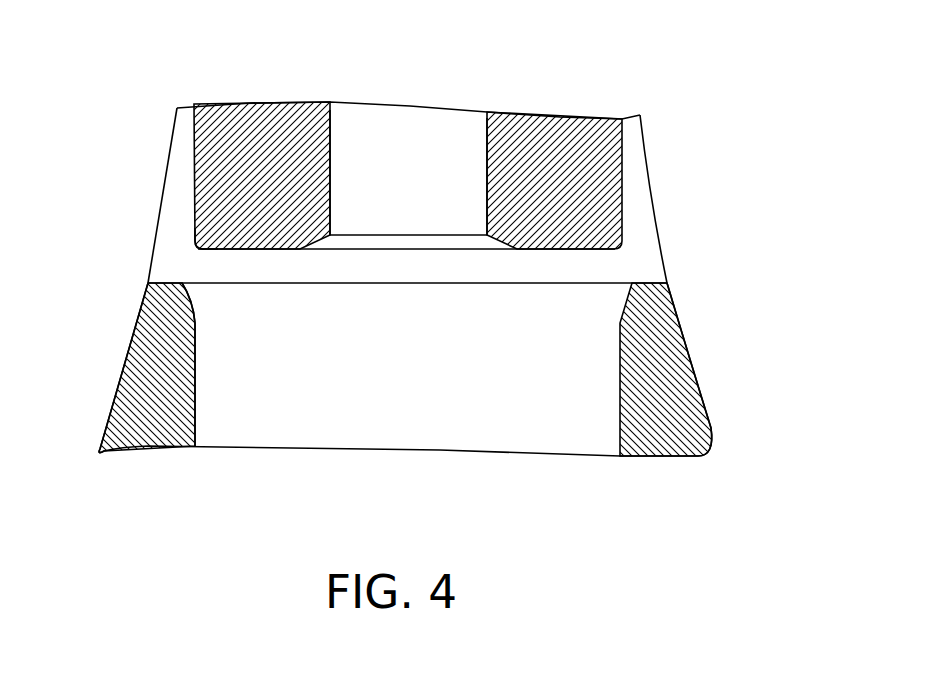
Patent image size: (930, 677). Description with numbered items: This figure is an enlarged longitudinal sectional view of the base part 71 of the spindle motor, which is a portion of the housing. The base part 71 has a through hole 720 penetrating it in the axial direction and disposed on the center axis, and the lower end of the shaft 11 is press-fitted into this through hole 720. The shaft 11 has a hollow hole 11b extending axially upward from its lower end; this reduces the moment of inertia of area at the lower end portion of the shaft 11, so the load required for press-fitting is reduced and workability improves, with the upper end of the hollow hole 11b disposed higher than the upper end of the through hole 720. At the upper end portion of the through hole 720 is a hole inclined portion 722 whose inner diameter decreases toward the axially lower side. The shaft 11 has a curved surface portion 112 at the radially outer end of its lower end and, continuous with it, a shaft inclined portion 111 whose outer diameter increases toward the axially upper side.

The shaft 11 is at (344, 162).
The hollow hole 11b is at (418, 135).
The shaft inclined portion 111 is at (195, 223).
The curved surface portion 112 is at (203, 248).
The base part 71 is at (162, 427).
The through hole 720 is at (405, 412).
The hole inclined portion 722 is at (187, 303).